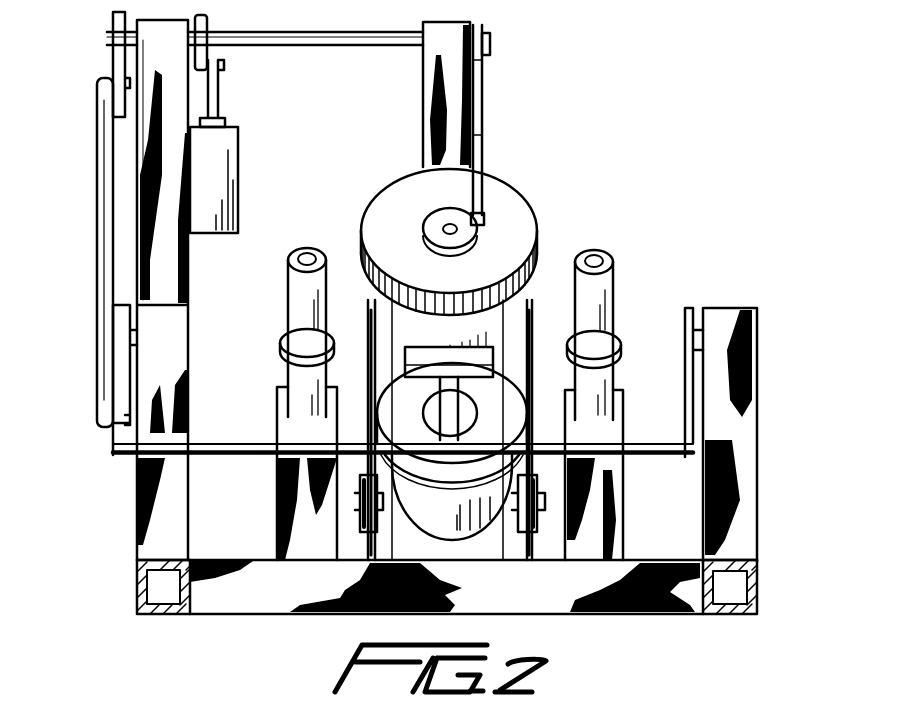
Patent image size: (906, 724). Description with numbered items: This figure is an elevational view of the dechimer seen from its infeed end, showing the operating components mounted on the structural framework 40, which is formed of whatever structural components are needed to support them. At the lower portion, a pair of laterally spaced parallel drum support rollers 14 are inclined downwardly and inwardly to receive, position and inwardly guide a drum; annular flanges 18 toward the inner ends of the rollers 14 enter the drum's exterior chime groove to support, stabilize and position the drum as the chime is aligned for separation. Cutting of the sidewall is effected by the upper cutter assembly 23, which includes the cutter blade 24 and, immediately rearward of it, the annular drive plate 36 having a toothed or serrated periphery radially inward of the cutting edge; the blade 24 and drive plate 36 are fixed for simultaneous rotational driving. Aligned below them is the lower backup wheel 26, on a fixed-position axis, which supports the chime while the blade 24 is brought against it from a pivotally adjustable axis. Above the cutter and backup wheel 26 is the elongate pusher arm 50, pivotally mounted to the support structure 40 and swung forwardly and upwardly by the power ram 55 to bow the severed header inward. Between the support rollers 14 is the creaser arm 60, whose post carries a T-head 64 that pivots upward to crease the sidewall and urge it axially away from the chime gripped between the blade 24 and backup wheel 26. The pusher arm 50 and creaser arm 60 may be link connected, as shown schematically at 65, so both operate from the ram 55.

The drum support rollers 14 is at (288, 301).
The annular flanges 18 is at (283, 336).
The upper cutter assembly 23 is at (470, 213).
The cutter blade 24 is at (537, 222).
The backup wheel 26 is at (408, 412).
The drive plate 36 is at (423, 315).
The structural framework 40 is at (748, 431).
The pusher arm 50 is at (487, 73).
The power ram 55 is at (225, 140).
The creaser arm 60 is at (463, 407).
The T-head 64 is at (468, 356).
The link connection 65 is at (97, 232).